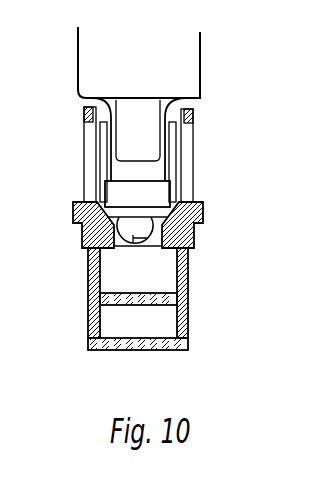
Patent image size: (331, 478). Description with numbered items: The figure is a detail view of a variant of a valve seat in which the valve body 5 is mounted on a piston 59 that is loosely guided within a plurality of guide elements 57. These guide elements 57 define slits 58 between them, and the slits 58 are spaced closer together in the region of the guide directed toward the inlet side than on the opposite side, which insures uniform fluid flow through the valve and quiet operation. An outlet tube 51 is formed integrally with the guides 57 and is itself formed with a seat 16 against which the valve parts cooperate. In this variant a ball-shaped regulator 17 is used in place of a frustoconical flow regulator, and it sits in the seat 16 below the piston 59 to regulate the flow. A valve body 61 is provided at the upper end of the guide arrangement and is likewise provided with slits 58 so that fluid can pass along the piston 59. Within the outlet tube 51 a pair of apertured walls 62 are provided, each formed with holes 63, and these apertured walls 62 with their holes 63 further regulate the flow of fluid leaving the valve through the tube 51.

The valve body 5 is at (162, 216).
The seat 16 is at (73, 210).
The ball-shaped regulator 17 is at (188, 251).
The outlet tube 51 is at (88, 275).
The guide elements 57 is at (176, 175).
The slits 58 is at (187, 147).
The piston 59 is at (120, 170).
The valve body 61 is at (193, 119).
The apertured walls 62 is at (188, 326).
The holes 63 is at (118, 350).